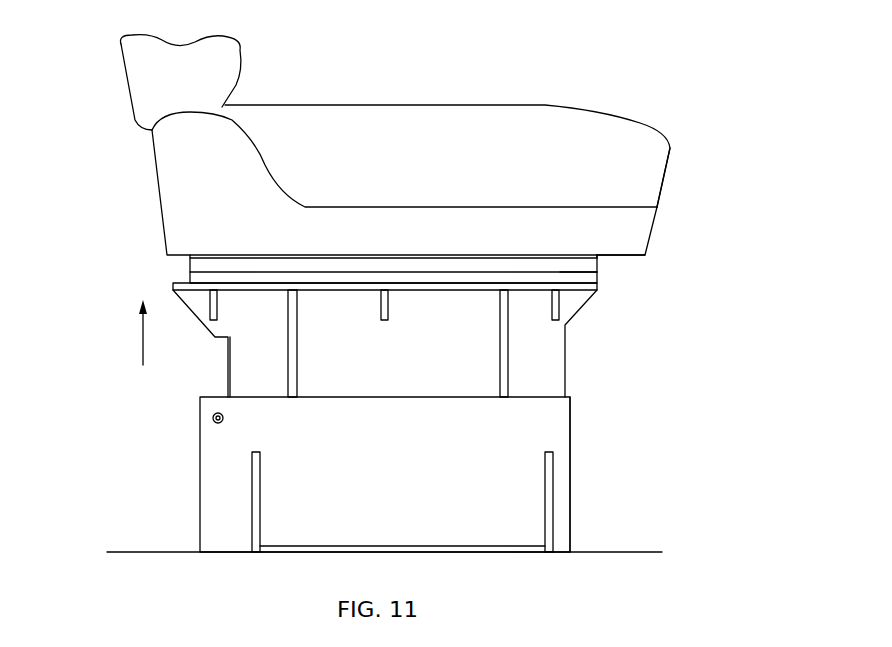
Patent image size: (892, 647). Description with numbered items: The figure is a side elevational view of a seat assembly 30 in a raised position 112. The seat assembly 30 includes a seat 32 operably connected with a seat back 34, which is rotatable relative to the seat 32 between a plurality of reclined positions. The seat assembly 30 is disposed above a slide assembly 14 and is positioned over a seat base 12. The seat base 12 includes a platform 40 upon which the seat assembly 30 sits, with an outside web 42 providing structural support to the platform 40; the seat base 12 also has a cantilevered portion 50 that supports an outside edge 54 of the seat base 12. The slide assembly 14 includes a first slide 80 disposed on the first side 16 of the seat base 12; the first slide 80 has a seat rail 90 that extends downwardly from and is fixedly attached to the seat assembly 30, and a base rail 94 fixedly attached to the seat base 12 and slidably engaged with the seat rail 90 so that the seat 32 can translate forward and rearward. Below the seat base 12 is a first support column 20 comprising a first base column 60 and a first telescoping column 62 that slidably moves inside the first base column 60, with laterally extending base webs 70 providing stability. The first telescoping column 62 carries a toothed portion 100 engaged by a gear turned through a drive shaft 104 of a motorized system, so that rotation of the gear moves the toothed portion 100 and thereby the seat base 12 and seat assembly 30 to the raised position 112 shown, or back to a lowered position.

The seat base 12 is at (425, 421).
The slide assembly 14 is at (362, 259).
The first side 16 is at (537, 217).
The first support column 20 is at (406, 483).
The seat assembly 30 is at (395, 142).
The seat 32 is at (416, 163).
The seat back 34 is at (200, 103).
The platform 40 is at (328, 346).
The outside web 42 is at (220, 308).
The cantilevered portion 50 is at (398, 343).
The outside edge 54 is at (630, 258).
The first base column 60 is at (572, 476).
The first telescoping column 62 is at (587, 305).
The base webs 70 is at (260, 480).
The first slide 80 is at (511, 248).
The seat rail 90 is at (583, 265).
The base rail 94 is at (567, 265).
The toothed portion 100 is at (227, 370).
The drive shaft 104 is at (212, 420).
The raised position 112 is at (682, 99).